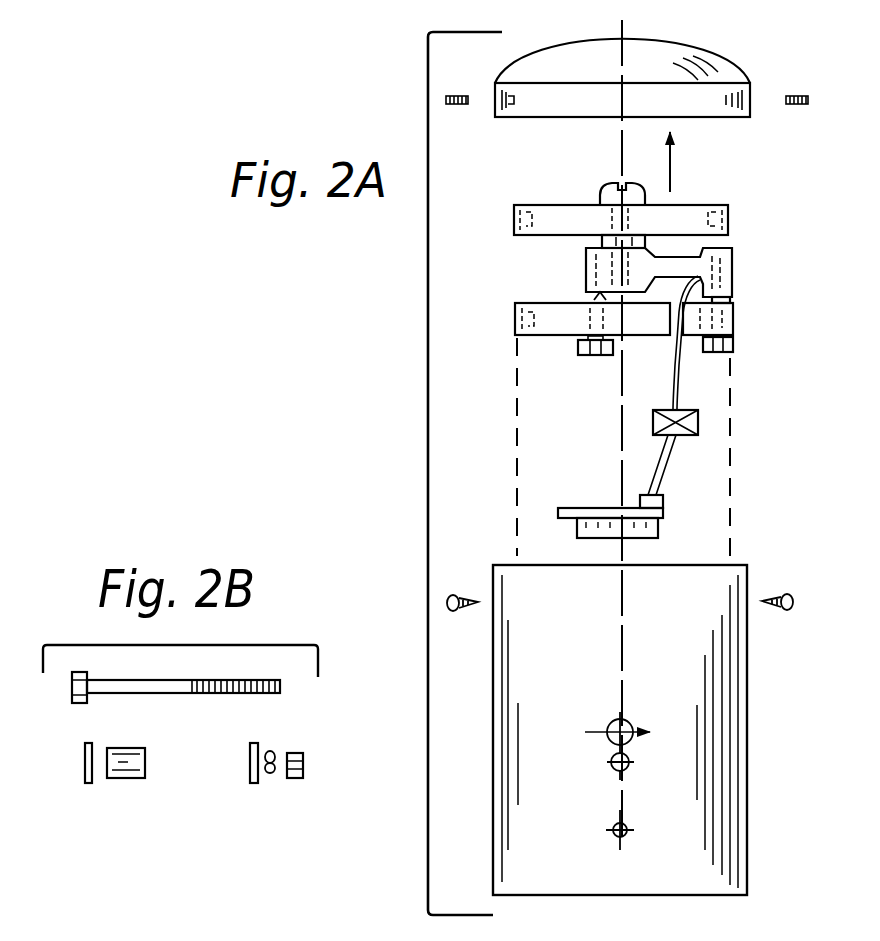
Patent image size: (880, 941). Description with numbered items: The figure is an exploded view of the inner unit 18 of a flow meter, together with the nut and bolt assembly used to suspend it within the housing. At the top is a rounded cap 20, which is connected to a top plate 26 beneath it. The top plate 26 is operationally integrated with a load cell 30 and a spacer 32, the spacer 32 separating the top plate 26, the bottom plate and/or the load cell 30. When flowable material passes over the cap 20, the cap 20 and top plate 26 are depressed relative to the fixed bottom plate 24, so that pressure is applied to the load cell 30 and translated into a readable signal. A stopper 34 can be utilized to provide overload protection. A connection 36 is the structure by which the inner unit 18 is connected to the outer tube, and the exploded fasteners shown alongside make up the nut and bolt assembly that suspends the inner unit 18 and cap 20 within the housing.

The inner unit 18 is at (750, 697).
The cap 20 is at (703, 53).
The lower mounting plate 24 is at (540, 341).
The top plate 26 is at (701, 203).
The load cell 30 is at (740, 287).
The spacer 32 is at (600, 243).
The stopper 34 is at (578, 358).
The connection 36 is at (678, 512).